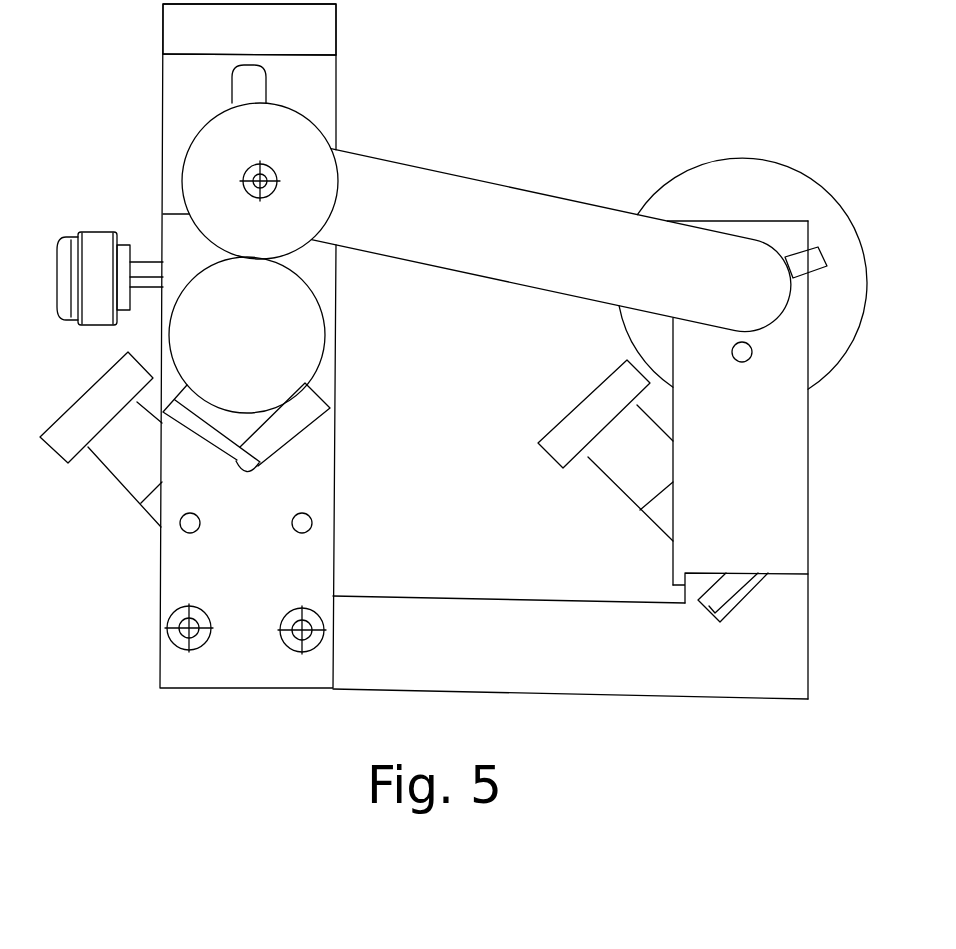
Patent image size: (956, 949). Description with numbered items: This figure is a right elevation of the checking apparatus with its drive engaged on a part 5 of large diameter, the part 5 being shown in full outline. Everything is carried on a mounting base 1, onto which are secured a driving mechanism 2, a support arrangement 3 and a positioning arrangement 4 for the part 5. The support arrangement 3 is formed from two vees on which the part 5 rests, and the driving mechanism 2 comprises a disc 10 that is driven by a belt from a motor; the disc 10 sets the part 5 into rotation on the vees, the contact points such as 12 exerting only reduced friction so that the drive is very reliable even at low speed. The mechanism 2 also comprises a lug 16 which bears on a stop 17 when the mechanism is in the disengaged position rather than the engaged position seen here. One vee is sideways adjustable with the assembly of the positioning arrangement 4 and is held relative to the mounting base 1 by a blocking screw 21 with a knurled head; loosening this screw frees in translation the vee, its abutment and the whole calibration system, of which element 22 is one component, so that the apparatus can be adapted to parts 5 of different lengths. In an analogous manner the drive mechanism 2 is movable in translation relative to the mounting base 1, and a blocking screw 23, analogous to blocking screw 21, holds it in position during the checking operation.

The mounting base 1 is at (553, 662).
The driving mechanism 2 is at (619, 138).
The support arrangement 3 is at (258, 598).
The positioning arrangement 4 is at (126, 160).
The part 5 is at (294, 338).
The disc 10 is at (282, 150).
The contact point 12 is at (310, 388).
The lug 16 is at (810, 263).
The stop 17 is at (742, 362).
The blocking screw 21 is at (146, 461).
The calibration system element 22 is at (92, 310).
The blocking screw 23 is at (649, 473).